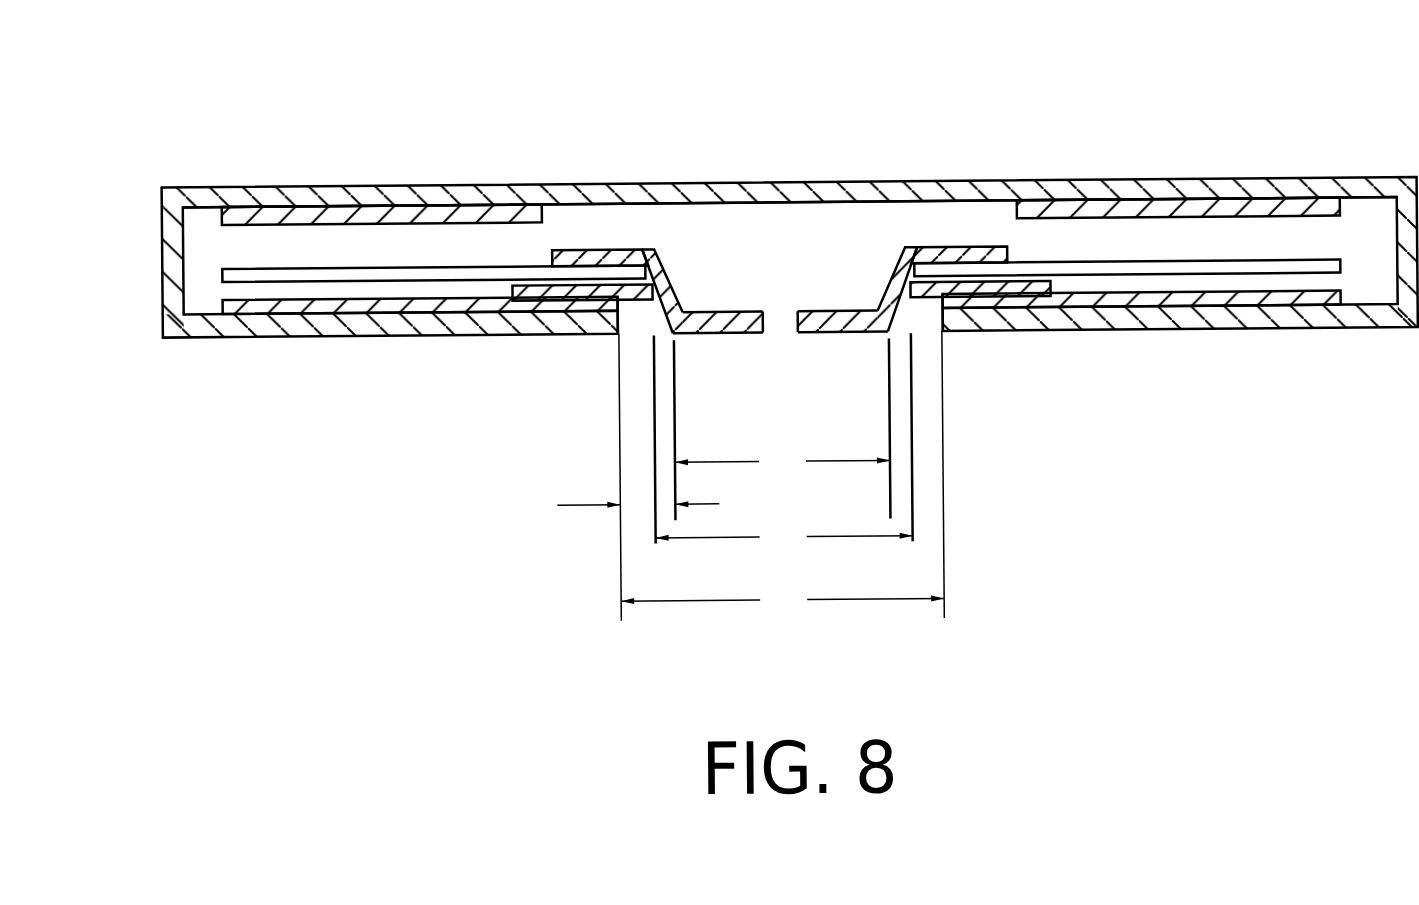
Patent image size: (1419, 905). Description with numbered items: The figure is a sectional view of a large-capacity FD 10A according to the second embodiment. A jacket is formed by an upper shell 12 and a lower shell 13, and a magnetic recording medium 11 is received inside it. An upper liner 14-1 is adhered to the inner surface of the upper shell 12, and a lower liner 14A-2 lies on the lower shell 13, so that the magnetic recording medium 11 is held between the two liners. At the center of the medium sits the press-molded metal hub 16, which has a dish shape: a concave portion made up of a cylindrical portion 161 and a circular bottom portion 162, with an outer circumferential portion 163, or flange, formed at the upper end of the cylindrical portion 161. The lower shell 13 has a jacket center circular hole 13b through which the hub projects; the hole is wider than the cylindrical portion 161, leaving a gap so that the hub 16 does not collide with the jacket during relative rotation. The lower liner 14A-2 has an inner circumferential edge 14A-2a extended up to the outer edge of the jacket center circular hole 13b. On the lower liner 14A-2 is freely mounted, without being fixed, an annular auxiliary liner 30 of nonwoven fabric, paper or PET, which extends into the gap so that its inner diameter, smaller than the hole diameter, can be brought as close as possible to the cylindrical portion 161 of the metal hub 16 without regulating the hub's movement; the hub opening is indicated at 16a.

The large-capacity FD 10A is at (357, 140).
The magnetic recording medium 11 is at (259, 270).
The upper shell 12 is at (1161, 195).
The lower shell 13 is at (249, 332).
The jacket center circular hole 13b is at (634, 323).
The upper liner 14-1 is at (502, 219).
The lower liner 14A-2 is at (407, 312).
The inner circumferential edge 14A-2a is at (781, 234).
The metal hub 16 is at (779, 277).
The opening of connection member 16a is at (788, 322).
The cylindrical portion 161 is at (680, 299).
The circular bottom portion 162 is at (732, 340).
The outer circumferential portion 163 is at (598, 255).
The annular auxiliary liner 30 is at (567, 302).